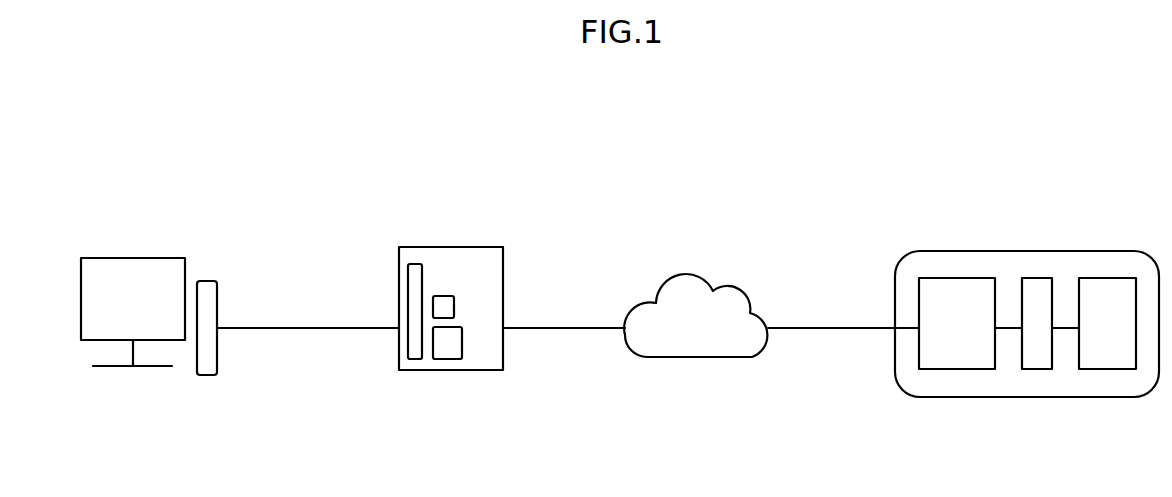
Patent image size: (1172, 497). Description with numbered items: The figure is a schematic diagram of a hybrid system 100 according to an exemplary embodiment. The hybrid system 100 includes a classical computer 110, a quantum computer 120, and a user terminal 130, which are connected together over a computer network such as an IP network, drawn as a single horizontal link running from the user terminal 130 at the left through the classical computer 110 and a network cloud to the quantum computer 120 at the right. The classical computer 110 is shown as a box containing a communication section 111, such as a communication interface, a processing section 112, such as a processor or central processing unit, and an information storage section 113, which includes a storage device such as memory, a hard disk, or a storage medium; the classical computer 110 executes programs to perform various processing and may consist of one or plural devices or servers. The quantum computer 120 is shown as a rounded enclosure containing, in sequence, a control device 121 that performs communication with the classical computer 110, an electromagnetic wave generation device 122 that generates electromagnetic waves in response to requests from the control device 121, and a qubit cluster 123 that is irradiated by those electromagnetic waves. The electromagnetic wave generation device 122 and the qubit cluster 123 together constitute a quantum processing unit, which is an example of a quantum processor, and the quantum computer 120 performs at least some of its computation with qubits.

The hybrid system 100 is at (774, 199).
The classical computer 110 is at (423, 299).
The communication section 111 is at (407, 282).
The processing section 112 is at (443, 296).
The information storage section 113 is at (447, 360).
The quantum computer 120 is at (1027, 320).
The control device 121 is at (957, 370).
The electromagnetic wave generation device 122 is at (1037, 370).
The qubit cluster 123 is at (1108, 370).
The user terminal 130 is at (205, 280).